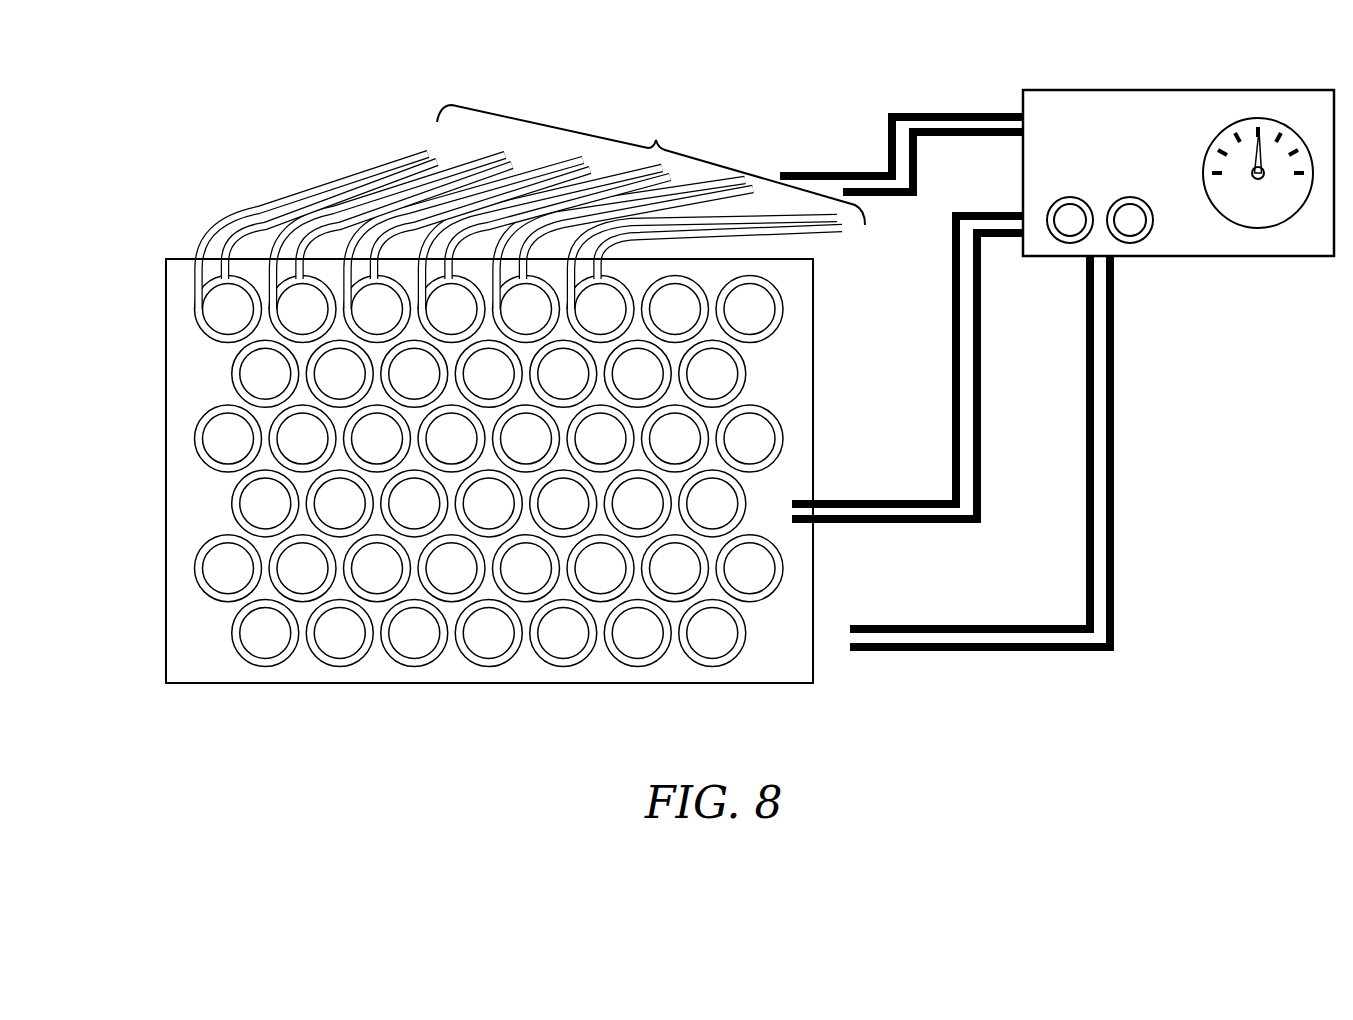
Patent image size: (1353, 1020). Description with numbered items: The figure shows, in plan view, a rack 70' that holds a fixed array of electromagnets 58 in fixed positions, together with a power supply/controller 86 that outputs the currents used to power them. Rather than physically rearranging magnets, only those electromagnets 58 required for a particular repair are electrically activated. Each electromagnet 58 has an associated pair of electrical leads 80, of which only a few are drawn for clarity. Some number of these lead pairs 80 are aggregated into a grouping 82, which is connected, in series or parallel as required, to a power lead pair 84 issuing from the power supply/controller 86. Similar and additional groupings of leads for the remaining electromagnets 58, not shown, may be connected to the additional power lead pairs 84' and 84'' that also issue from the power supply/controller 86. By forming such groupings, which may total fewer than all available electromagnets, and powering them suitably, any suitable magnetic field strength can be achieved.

The electromagnet 58 is at (223, 567).
The rack 70' is at (436, 471).
The pair of electrical leads 80 is at (463, 163).
The grouping 82 is at (675, 143).
The power lead pair 84 is at (901, 127).
The additional power lead pair 84' is at (993, 367).
The additional power lead pair 84'' is at (1090, 451).
The power supply/controller 86 is at (1118, 147).